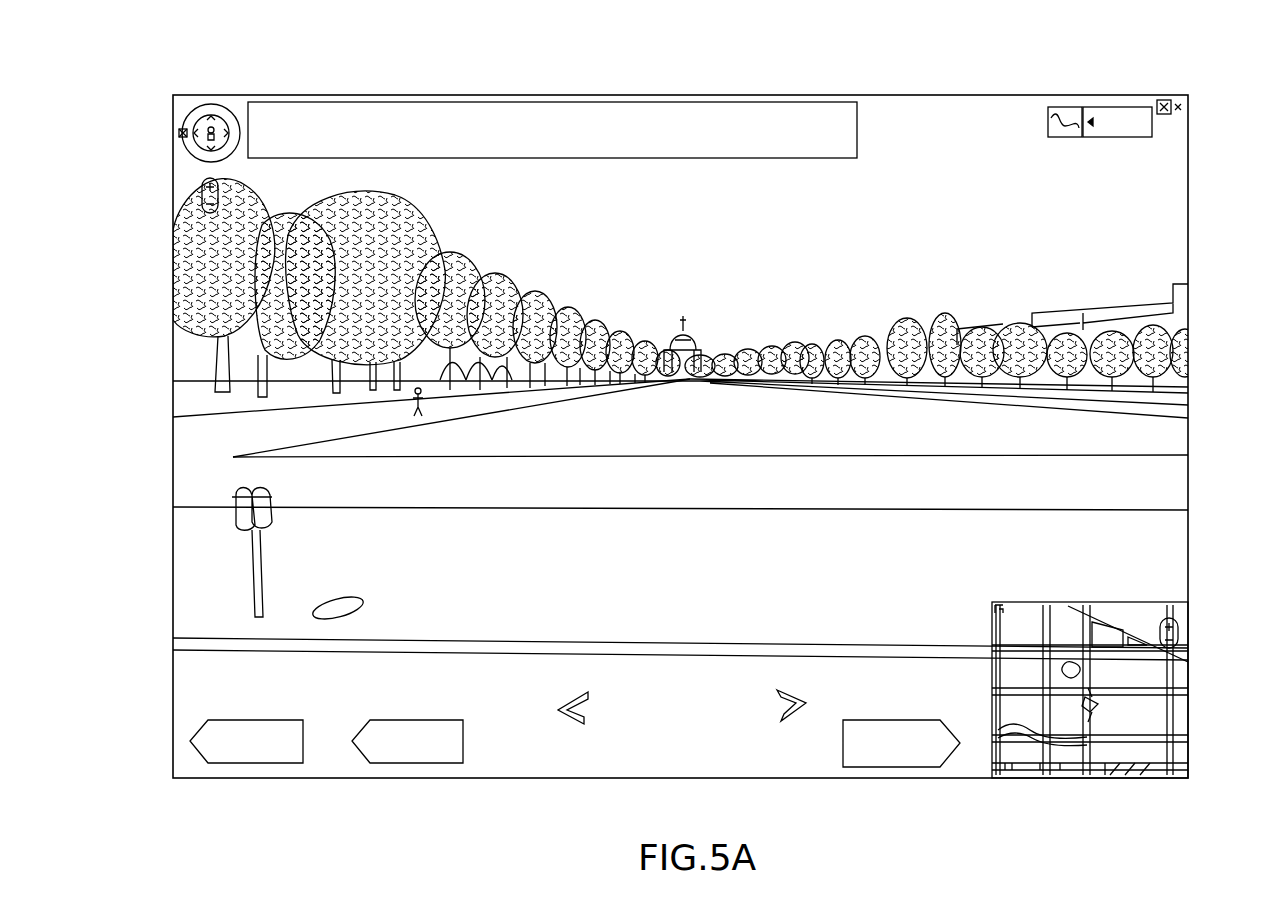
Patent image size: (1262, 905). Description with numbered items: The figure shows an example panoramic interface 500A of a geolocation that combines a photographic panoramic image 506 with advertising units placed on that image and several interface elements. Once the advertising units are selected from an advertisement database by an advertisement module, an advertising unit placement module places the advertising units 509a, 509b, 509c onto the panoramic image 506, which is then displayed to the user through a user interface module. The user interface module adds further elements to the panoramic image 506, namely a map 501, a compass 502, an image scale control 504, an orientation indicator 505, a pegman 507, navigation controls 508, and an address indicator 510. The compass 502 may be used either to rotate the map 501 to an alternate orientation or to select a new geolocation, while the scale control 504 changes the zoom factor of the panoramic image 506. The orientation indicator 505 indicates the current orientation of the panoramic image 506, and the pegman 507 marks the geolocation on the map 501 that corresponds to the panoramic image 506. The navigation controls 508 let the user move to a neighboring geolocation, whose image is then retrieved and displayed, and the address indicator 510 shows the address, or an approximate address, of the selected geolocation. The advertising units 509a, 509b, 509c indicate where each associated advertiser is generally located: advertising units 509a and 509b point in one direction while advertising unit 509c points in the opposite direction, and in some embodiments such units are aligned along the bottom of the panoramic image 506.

The panoramic interface 500A is at (1222, 59).
The map 501 is at (1118, 726).
The compass 502 is at (200, 113).
The image scale control 504 is at (178, 184).
The orientation indicator 505 is at (1093, 716).
The panoramic image 506 is at (948, 96).
The pegman 507 is at (1098, 706).
The navigation controls 508 is at (577, 724).
The advertising unit 509a is at (257, 763).
The advertising unit 509b is at (410, 763).
The advertising unit 509c is at (888, 767).
The address indicator 510 is at (342, 104).